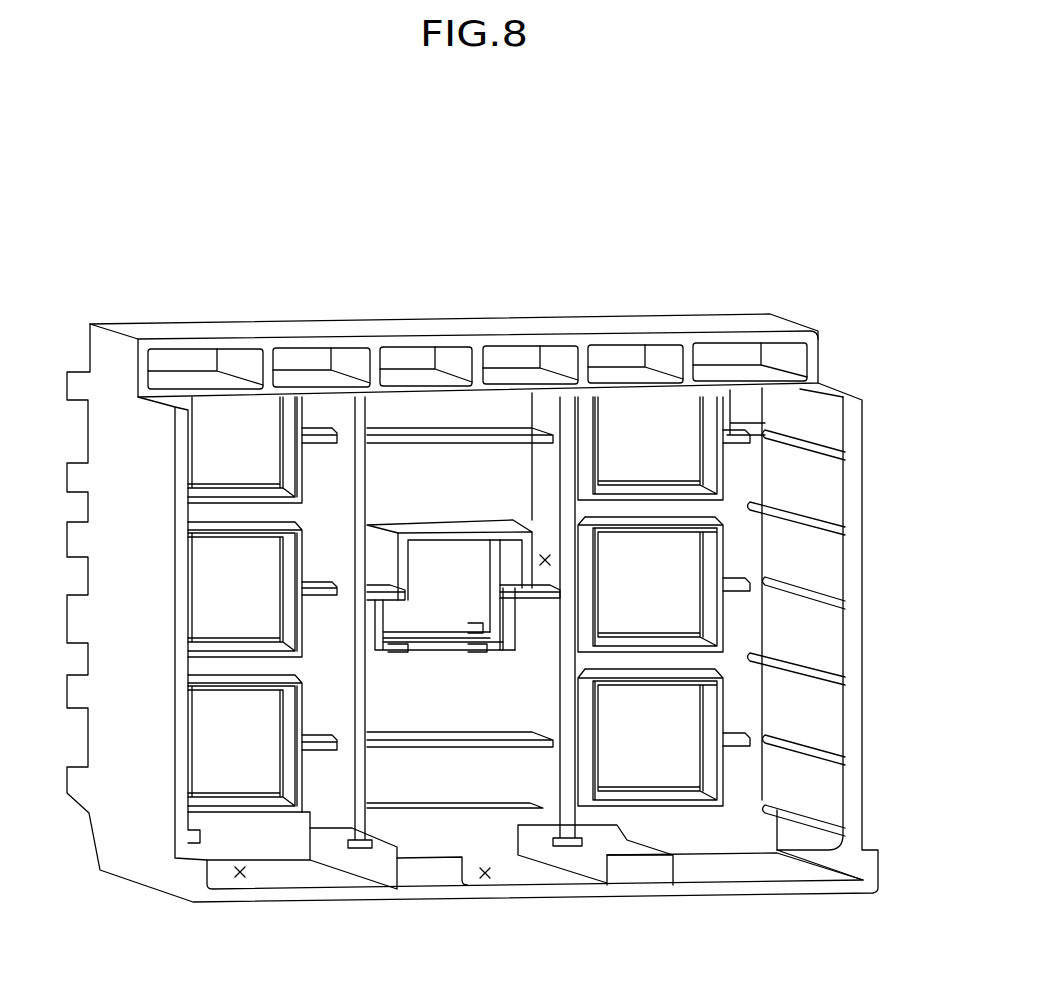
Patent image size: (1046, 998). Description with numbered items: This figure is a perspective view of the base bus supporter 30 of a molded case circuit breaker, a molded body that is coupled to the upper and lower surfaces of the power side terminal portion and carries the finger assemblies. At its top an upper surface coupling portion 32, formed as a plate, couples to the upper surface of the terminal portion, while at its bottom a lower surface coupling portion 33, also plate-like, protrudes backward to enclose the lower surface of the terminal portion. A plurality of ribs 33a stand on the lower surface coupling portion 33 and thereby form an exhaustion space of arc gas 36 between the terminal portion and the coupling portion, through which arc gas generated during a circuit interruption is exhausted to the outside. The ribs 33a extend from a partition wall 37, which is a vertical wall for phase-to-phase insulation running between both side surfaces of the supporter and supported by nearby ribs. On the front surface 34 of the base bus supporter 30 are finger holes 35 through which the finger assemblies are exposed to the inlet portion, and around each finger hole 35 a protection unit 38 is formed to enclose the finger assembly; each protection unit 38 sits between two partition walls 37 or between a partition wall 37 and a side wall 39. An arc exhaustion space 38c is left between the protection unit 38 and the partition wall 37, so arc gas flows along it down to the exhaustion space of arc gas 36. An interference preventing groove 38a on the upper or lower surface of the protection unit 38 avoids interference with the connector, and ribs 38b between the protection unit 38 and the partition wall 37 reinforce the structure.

The base bus supporter 30 is at (862, 511).
The upper surface coupling portion 32 is at (742, 375).
The lower surface coupling portion 33 is at (270, 878).
The ribs 33a is at (366, 835).
The front surface 34 is at (382, 478).
The finger hole 35 is at (443, 573).
The exhaustion space of arc gas 36 is at (243, 878).
The partition wall 37 is at (367, 757).
The protection unit 38 is at (422, 527).
The interference preventing groove 38a is at (463, 647).
The ribs 38b is at (375, 585).
The arc exhaustion space 38c is at (544, 556).
The side wall 39 is at (813, 560).